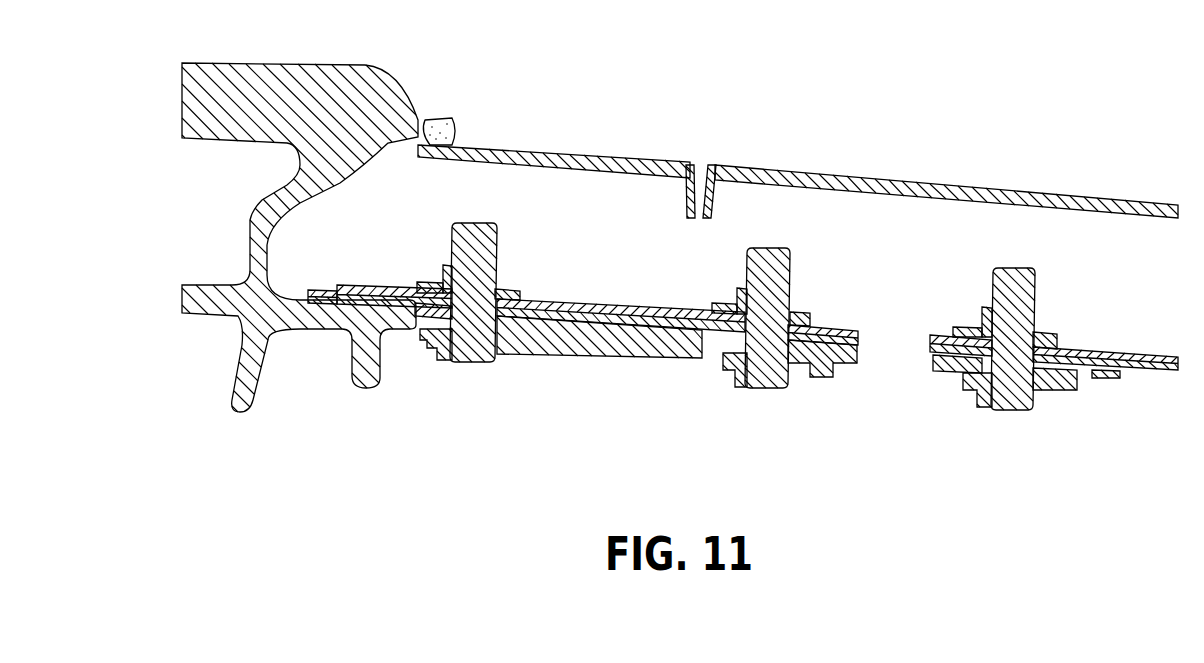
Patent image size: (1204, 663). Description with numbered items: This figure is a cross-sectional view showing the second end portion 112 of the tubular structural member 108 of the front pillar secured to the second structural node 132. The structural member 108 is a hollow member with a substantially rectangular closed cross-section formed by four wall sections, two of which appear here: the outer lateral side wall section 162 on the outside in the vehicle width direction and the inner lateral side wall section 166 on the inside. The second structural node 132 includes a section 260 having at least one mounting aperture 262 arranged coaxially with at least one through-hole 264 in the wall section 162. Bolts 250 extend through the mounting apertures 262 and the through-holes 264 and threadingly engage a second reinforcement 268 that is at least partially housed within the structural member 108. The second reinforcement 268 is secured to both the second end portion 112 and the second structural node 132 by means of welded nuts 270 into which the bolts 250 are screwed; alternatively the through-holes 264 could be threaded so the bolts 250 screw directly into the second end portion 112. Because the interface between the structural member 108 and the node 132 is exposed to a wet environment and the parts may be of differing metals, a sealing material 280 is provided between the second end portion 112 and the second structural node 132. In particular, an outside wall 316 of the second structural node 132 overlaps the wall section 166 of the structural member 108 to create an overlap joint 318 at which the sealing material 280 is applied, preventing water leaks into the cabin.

The structural member 108 is at (990, 165).
The second end portion 112 is at (632, 160).
The second left structural node 132 is at (262, 420).
The outer lateral side wall section 162 is at (665, 340).
The inner lateral side wall section 166 is at (862, 178).
The bolt 250 is at (478, 365).
The section 260 is at (583, 357).
The mounting aperture 262 is at (440, 335).
The through-hole 264 is at (523, 296).
The second reinforcement 268 is at (627, 313).
The welded nut 270 is at (437, 278).
The sealing material 280 is at (455, 128).
The outside wall 316 is at (419, 120).
The overlap joint 318 is at (412, 143).